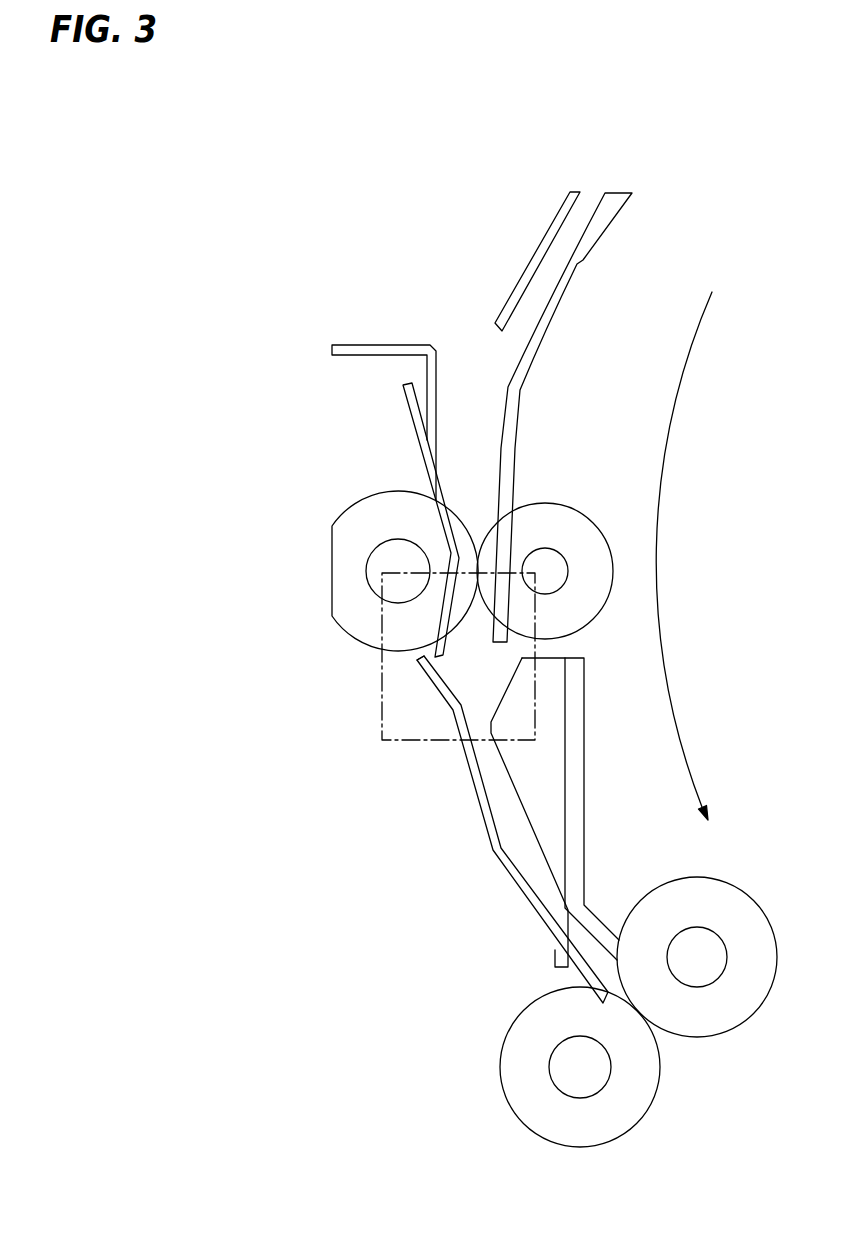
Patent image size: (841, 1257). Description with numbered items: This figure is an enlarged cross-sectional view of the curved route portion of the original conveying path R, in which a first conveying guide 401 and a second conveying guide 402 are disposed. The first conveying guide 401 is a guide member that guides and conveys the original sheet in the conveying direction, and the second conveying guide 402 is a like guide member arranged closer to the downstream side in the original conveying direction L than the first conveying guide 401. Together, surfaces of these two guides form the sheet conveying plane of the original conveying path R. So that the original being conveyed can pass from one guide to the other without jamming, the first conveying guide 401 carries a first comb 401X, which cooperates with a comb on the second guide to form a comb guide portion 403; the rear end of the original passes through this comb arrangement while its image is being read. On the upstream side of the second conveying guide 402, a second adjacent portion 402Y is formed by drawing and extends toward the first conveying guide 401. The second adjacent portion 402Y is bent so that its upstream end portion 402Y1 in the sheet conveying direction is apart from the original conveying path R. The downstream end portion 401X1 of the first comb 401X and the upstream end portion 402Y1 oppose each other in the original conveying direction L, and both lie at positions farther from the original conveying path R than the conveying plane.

The first conveying guide 401 is at (427, 475).
The first comb 401X is at (445, 612).
The downstream end portion of the first comb 401X1 is at (385, 637).
The comb guide portion 403 is at (382, 679).
The upstream end portion of the second adjacent portion 402Y1 is at (417, 665).
The second adjacent portion 402Y is at (473, 780).
The second conveying guide 402 is at (490, 838).
The original conveying path R is at (487, 360).
The original conveying direction L is at (684, 556).